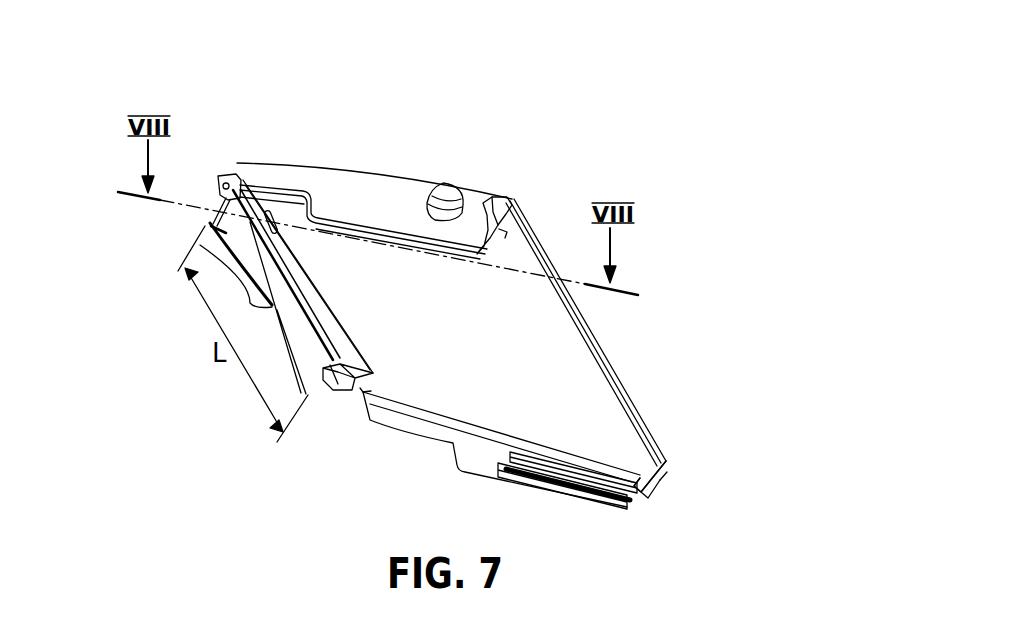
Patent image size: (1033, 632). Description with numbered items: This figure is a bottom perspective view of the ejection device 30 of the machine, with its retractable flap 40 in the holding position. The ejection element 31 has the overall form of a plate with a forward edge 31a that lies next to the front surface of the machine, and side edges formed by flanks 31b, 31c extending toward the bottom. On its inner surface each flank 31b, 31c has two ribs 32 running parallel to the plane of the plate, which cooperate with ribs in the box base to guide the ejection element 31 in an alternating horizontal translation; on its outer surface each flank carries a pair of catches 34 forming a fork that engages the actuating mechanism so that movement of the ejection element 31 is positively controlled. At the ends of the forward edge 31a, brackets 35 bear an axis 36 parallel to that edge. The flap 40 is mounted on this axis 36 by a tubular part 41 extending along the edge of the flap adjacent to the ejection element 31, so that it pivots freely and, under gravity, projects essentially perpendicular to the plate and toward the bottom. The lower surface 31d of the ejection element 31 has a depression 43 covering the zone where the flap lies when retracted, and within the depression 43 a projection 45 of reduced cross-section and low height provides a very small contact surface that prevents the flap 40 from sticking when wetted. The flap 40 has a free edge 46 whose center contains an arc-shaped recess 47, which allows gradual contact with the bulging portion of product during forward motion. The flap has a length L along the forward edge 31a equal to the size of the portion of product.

The ejection device 30 is at (626, 50).
The ejection element 31 is at (489, 342).
The forward edge 31a is at (297, 283).
The side flank 31b is at (345, 183).
The side flank 31c is at (467, 463).
The lower surface 31d is at (560, 338).
The ribs 32 is at (482, 258).
The catches 34 is at (495, 198).
The brackets 35 is at (222, 181).
The axis 36 is at (229, 182).
The retractable flap 40 is at (218, 228).
The tubular part 41 is at (338, 385).
The depression 43 is at (343, 342).
The projection 45 is at (274, 220).
The free edge 46 is at (310, 397).
The arc-shaped recess 47 is at (213, 252).